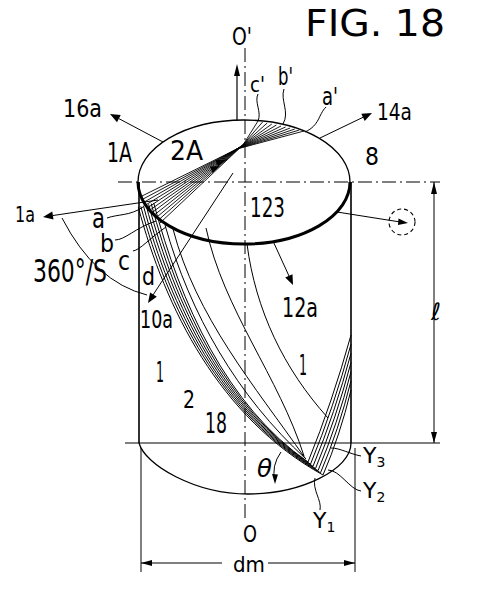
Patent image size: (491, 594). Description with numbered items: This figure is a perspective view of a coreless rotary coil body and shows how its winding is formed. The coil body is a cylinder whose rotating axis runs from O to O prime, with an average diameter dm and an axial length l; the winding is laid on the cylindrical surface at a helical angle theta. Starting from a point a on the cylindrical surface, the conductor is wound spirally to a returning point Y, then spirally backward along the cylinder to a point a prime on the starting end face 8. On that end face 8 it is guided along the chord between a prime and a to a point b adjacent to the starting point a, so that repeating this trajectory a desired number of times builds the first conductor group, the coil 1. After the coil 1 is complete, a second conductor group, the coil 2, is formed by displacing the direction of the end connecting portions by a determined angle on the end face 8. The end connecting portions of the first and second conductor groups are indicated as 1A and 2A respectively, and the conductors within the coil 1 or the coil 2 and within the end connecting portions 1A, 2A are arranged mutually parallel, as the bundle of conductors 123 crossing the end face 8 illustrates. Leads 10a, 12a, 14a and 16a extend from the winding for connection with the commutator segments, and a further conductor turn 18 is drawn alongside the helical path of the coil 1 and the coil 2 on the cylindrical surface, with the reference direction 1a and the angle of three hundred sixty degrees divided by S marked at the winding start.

The starting end face 8 is at (326, 159).
The end connecting portion of the first conductor group 1A is at (145, 190).
The end connecting portion of the second conductor group 2A is at (222, 172).
The yarn bundle 123 is at (188, 208).
The first conductor group (coil) 1 is at (204, 357).
The second conductor group (coil) 2 is at (232, 373).
The yarn turn 18 is at (258, 400).
The lead 10a is at (186, 253).
The reference direction arrow 1a is at (86, 213).
The lead 12a is at (295, 282).
The lead 14a is at (366, 118).
The lead 16a is at (113, 118).